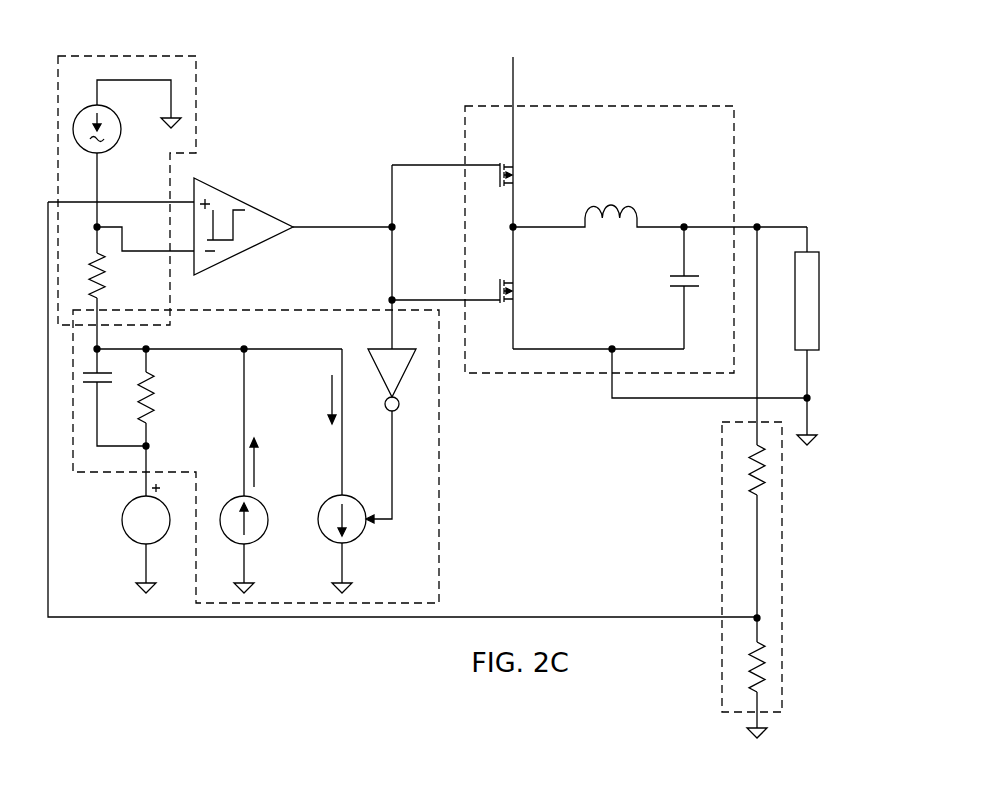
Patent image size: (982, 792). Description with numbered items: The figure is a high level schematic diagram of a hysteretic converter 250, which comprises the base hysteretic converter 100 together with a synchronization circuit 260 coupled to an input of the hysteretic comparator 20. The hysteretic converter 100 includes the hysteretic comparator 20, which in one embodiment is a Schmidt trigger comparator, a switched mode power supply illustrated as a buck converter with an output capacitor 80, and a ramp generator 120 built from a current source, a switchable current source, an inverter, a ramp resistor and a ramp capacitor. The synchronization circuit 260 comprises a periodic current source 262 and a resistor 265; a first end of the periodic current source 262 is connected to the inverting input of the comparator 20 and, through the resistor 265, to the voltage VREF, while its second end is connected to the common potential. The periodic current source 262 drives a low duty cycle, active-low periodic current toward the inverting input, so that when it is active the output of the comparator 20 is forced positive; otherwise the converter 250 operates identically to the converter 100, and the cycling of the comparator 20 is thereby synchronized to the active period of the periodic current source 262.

The hysteretic converter 250 is at (318, 62).
The hysteretic converter 100 is at (332, 145).
The output capacitor 80 is at (680, 288).
The hysteretic comparator 20 is at (243, 255).
The synchronization circuit 260 is at (196, 103).
The periodic current source 262 is at (121, 128).
The resistor 265 is at (110, 264).
The ramp generator 120 is at (439, 472).